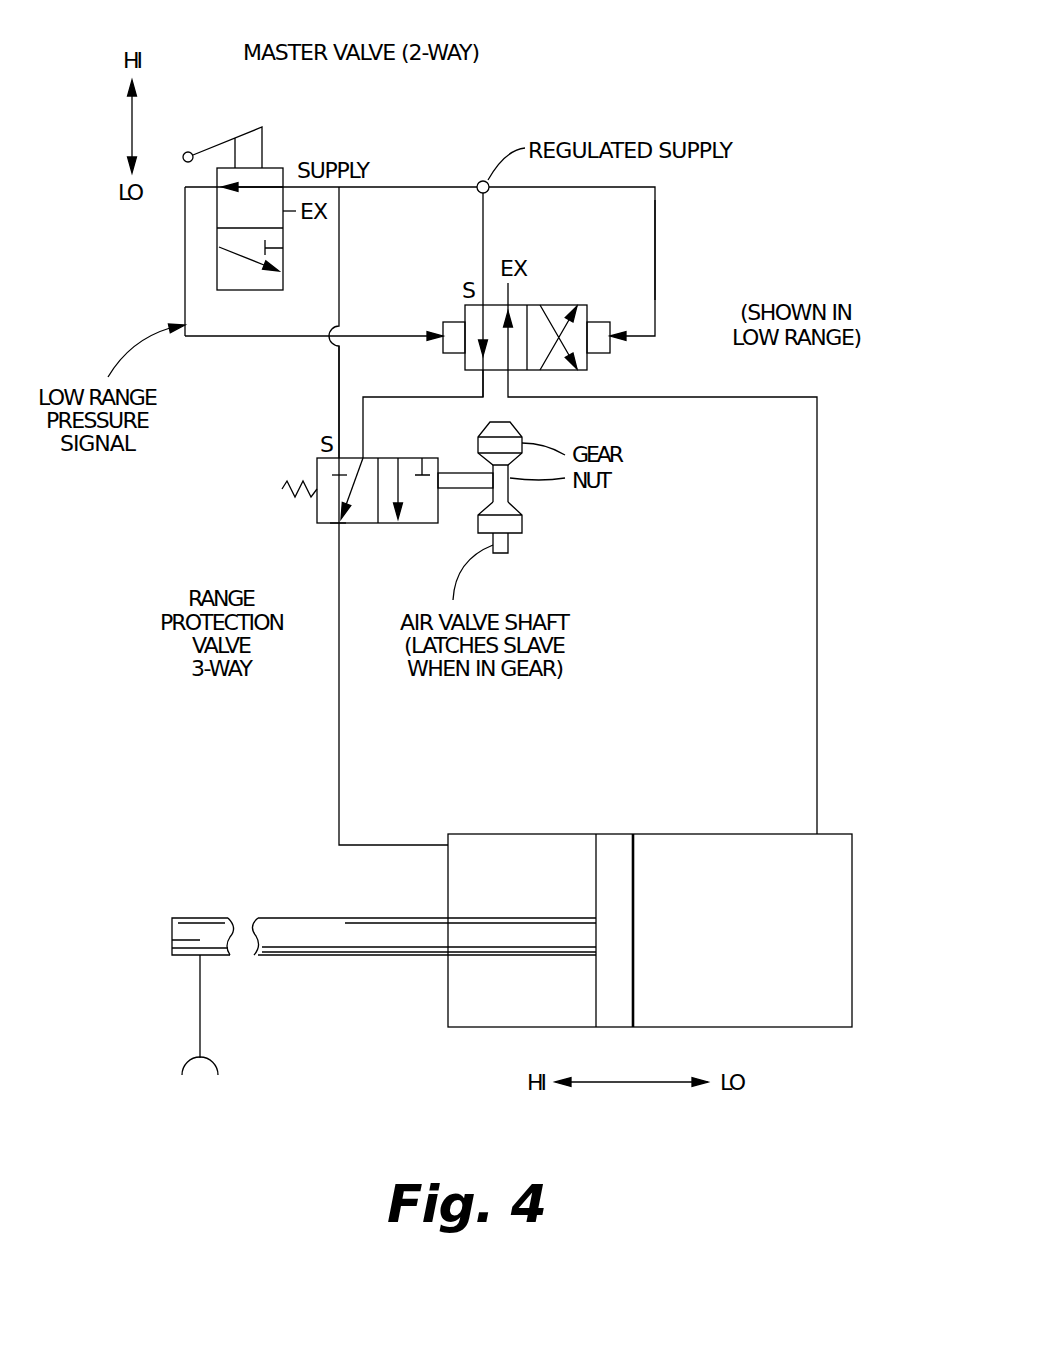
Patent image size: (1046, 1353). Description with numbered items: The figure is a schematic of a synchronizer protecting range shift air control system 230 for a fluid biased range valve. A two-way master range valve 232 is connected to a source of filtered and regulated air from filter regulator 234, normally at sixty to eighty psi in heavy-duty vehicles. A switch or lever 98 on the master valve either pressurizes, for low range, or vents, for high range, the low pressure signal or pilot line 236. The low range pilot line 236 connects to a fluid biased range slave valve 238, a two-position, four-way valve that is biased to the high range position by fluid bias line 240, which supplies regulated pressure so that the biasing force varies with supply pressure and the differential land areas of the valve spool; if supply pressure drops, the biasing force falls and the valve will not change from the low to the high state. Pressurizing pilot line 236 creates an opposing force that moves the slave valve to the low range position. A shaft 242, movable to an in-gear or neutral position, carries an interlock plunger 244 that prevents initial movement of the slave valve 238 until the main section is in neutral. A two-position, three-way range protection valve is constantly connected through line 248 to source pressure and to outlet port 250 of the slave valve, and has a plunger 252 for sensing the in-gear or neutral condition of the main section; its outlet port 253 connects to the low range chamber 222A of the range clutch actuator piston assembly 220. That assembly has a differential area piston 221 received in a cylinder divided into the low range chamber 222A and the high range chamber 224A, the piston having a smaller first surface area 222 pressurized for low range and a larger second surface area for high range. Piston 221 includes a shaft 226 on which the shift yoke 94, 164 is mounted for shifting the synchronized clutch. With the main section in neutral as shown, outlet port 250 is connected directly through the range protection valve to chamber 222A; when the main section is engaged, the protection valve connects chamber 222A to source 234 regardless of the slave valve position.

The synchronizer protecting range shift air control system 230 is at (585, 99).
The master range valve 232 is at (281, 147).
The switch or lever 98 is at (222, 150).
The filter regulator 234 is at (483, 181).
The low range pilot line 236 is at (185, 285).
The fluid biased range slave valve 238 is at (535, 285).
The fluid bias line 240 is at (655, 243).
The shaft 242 is at (522, 523).
The interlock plunger 244 is at (510, 543).
The line 248 is at (339, 260).
The outlet port 250 is at (485, 373).
The plunger 252 is at (455, 470).
The outlet port 253 is at (338, 523).
The range clutch actuator piston assembly 220 is at (842, 807).
The differential area piston 221 is at (625, 955).
The first surface area 222 is at (597, 872).
The low range chamber 222A is at (538, 886).
The high range chamber 224A is at (783, 994).
The shaft 226 is at (432, 940).
The shift yoke 94 is at (152, 996).
The shift yoke 164 is at (198, 1002).